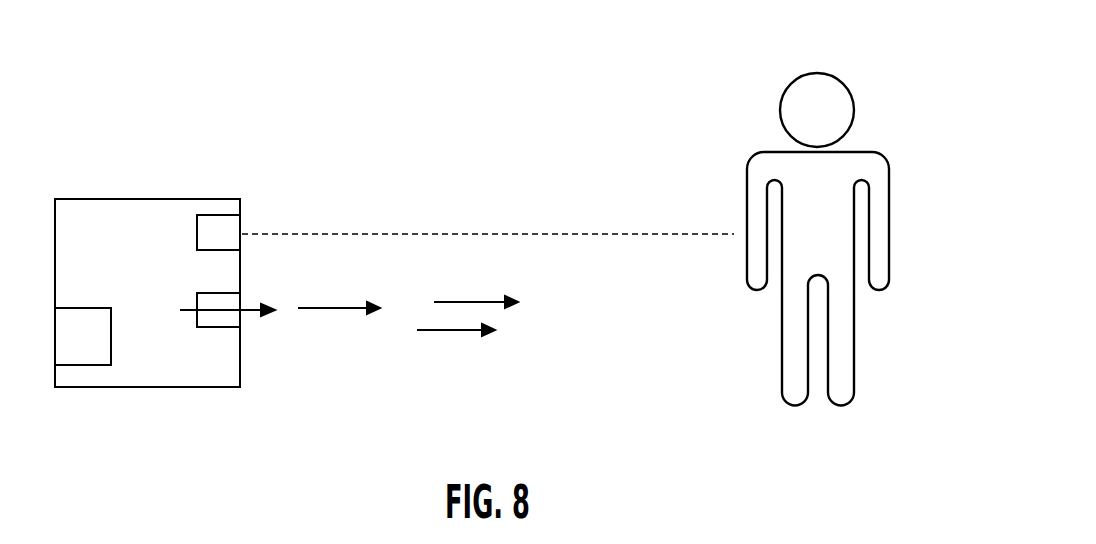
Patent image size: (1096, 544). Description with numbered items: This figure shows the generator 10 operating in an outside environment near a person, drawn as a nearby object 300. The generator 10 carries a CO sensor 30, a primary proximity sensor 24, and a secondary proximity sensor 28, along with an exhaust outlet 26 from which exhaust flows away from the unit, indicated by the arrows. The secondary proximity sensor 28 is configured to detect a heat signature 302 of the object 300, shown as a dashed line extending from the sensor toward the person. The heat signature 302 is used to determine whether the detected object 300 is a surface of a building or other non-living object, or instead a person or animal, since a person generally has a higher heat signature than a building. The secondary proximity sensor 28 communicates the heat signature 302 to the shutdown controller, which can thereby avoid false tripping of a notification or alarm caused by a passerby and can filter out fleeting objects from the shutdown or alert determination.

The generator 10 is at (107, 217).
The primary proximity sensor 24 is at (207, 228).
The secondary proximity sensor 28 is at (223, 217).
The exhaust outlet 26 is at (240, 322).
The CO sensor 30 is at (72, 348).
The object 300 is at (853, 58).
The heat signature 302 is at (488, 233).